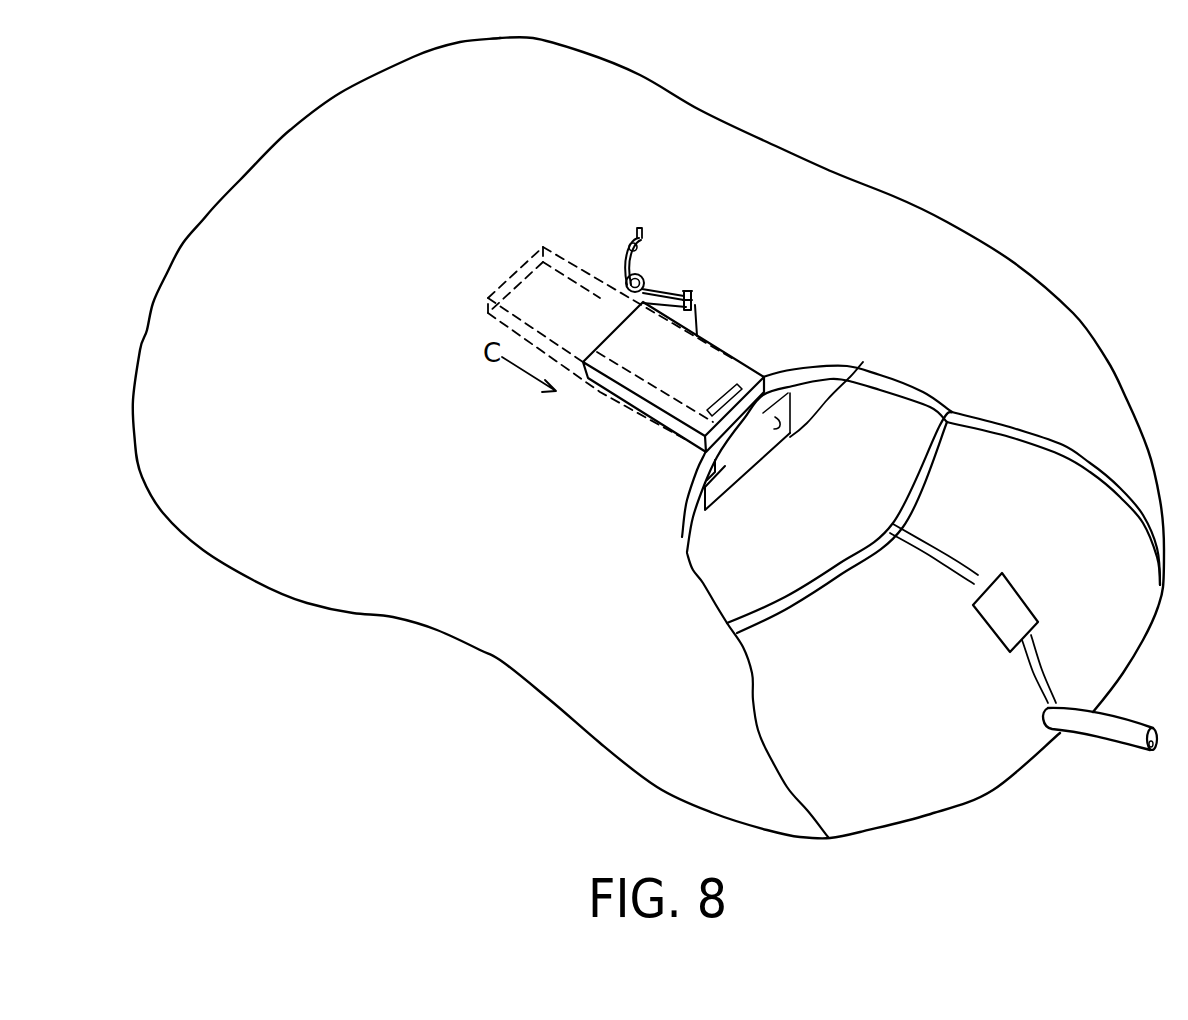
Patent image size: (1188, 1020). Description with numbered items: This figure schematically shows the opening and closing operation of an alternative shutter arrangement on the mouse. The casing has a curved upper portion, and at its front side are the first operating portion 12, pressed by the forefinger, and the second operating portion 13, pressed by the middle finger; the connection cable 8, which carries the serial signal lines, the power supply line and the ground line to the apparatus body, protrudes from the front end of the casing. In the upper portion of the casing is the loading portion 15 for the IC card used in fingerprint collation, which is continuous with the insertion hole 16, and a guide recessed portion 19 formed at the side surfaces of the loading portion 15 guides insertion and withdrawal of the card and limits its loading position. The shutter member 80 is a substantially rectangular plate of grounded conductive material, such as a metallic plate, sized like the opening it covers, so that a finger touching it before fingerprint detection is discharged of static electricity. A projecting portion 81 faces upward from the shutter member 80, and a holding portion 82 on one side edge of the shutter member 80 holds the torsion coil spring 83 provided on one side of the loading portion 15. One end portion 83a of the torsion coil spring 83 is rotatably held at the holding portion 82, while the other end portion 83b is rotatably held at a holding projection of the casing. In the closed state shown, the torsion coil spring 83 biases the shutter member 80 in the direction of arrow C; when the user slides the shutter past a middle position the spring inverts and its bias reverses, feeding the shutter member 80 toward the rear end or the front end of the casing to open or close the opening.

The connection cable 8 is at (1112, 730).
The first operating portion 12 is at (1120, 634).
The second operating portion 13 is at (985, 763).
The loading portion 15 is at (705, 486).
The insertion hole 16 is at (863, 362).
The guide recessed portion 19 is at (763, 433).
The shutter member 80 is at (650, 357).
The projecting portion 81 is at (725, 365).
The holding portion 82 is at (690, 292).
The torsion coil spring 83 is at (642, 275).
The one end portion 83a is at (693, 297).
The other end portion 83b is at (628, 240).